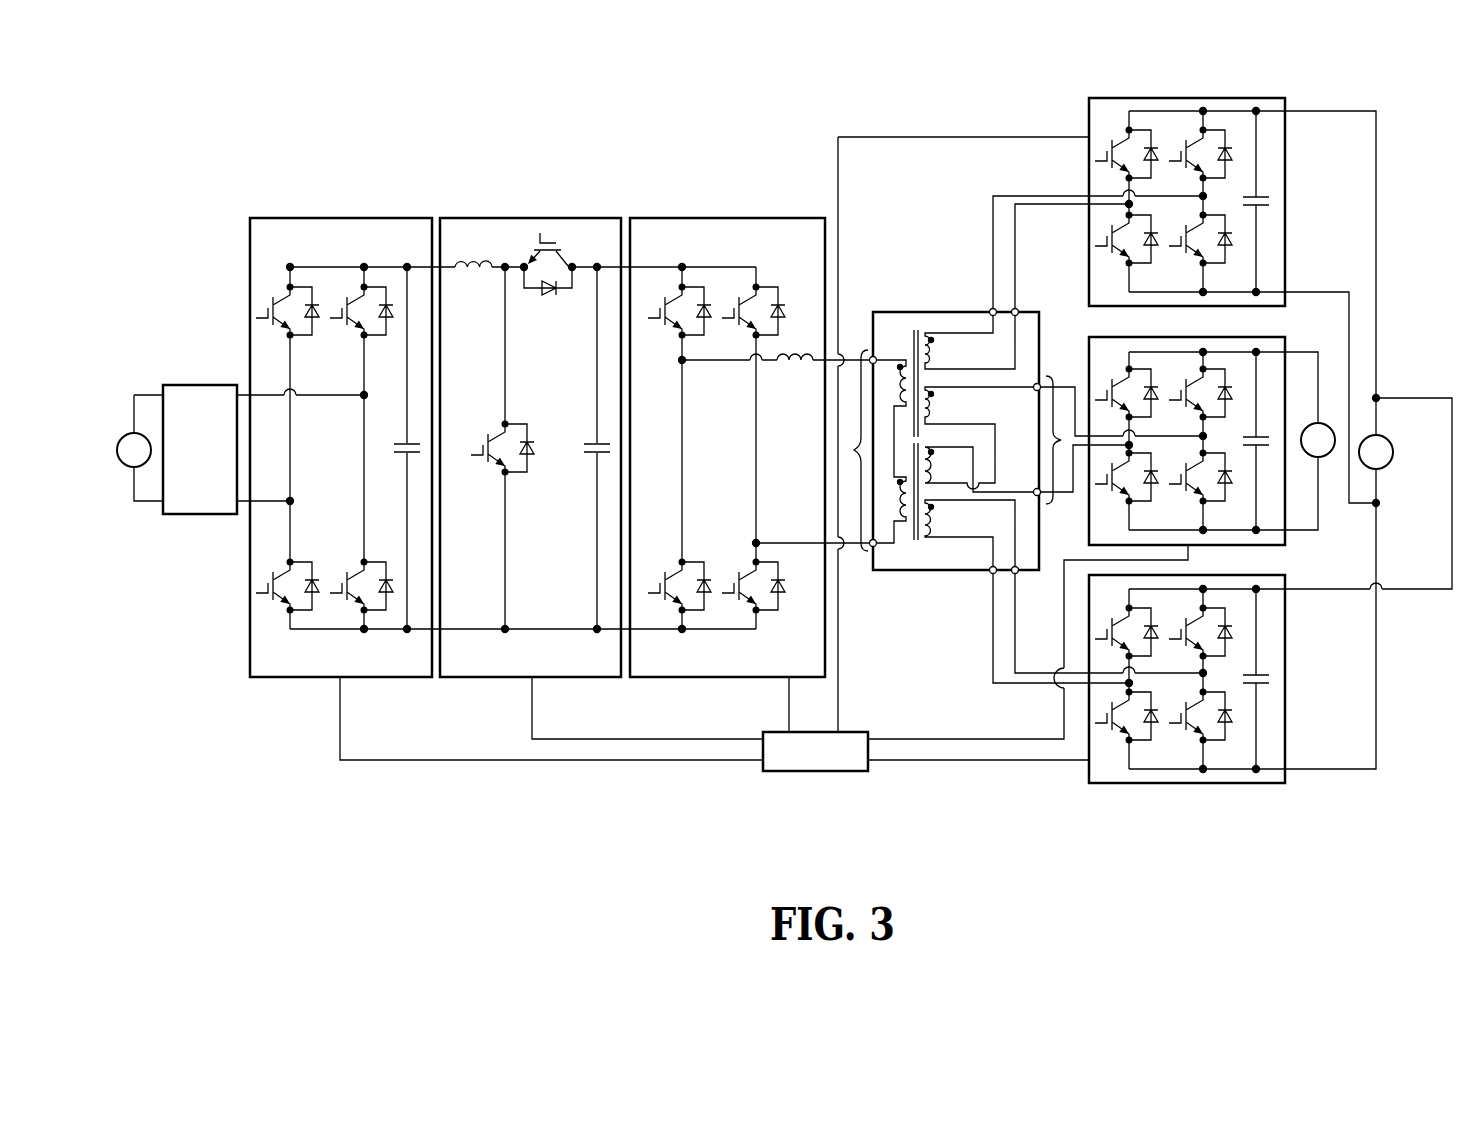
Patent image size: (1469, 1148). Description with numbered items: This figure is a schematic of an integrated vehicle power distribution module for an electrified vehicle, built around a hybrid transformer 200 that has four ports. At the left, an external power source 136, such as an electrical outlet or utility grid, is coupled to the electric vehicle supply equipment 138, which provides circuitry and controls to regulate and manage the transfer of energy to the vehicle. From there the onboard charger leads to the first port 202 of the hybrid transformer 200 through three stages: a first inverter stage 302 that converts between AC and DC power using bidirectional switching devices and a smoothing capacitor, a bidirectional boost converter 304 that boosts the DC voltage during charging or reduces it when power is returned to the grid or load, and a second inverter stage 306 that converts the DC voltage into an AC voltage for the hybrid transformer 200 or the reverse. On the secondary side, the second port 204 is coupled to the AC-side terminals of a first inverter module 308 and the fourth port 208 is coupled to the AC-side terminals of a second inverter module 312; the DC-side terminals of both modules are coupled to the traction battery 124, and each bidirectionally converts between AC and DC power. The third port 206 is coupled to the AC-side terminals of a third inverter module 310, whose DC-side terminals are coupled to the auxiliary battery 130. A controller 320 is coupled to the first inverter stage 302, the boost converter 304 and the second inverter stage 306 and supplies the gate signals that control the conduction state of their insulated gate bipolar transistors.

The traction battery 124 is at (1393, 452).
The auxiliary battery 130 is at (1327, 456).
The external power source 136 is at (128, 467).
The electric vehicle supply equipment 138 is at (220, 385).
The hybrid transformer 200 is at (925, 312).
The first port 202 is at (854, 450).
The second port 204 is at (1015, 312).
The third port 206 is at (1061, 440).
The fourth port 208 is at (1015, 573).
The first inverter stage 302 is at (370, 218).
The bidirectional boost converter 304 is at (562, 218).
The second inverter stage 306 is at (757, 218).
The first inverter module 308 is at (1180, 98).
The third inverter module 310 is at (1272, 337).
The second inverter module 312 is at (1287, 702).
The controller 320 is at (818, 771).